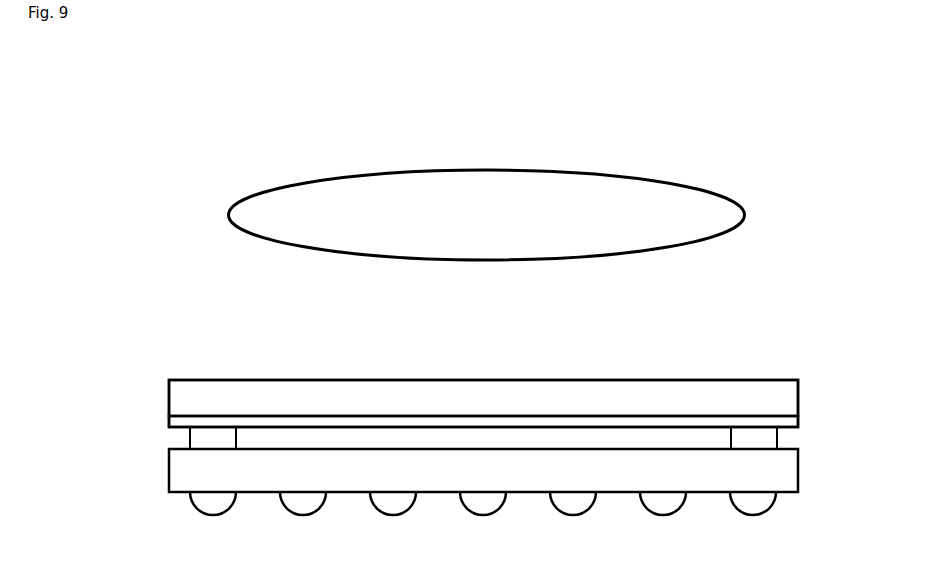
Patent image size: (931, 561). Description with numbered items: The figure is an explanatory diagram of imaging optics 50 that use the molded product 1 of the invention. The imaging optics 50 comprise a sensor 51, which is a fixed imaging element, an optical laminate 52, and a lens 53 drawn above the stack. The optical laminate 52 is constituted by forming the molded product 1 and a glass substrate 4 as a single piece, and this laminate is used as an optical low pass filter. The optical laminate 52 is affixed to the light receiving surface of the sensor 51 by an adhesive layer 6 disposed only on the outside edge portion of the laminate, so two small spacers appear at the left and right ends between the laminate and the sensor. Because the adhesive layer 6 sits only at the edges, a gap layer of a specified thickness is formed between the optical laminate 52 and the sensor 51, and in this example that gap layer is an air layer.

The imaging optics 50 is at (137, 165).
The lens 53 is at (265, 204).
The optical laminate 52 is at (213, 380).
The glass substrate 4 is at (786, 401).
The molded product 1 is at (790, 424).
The adhesive layer 6 is at (197, 436).
The sensor 51 is at (180, 473).